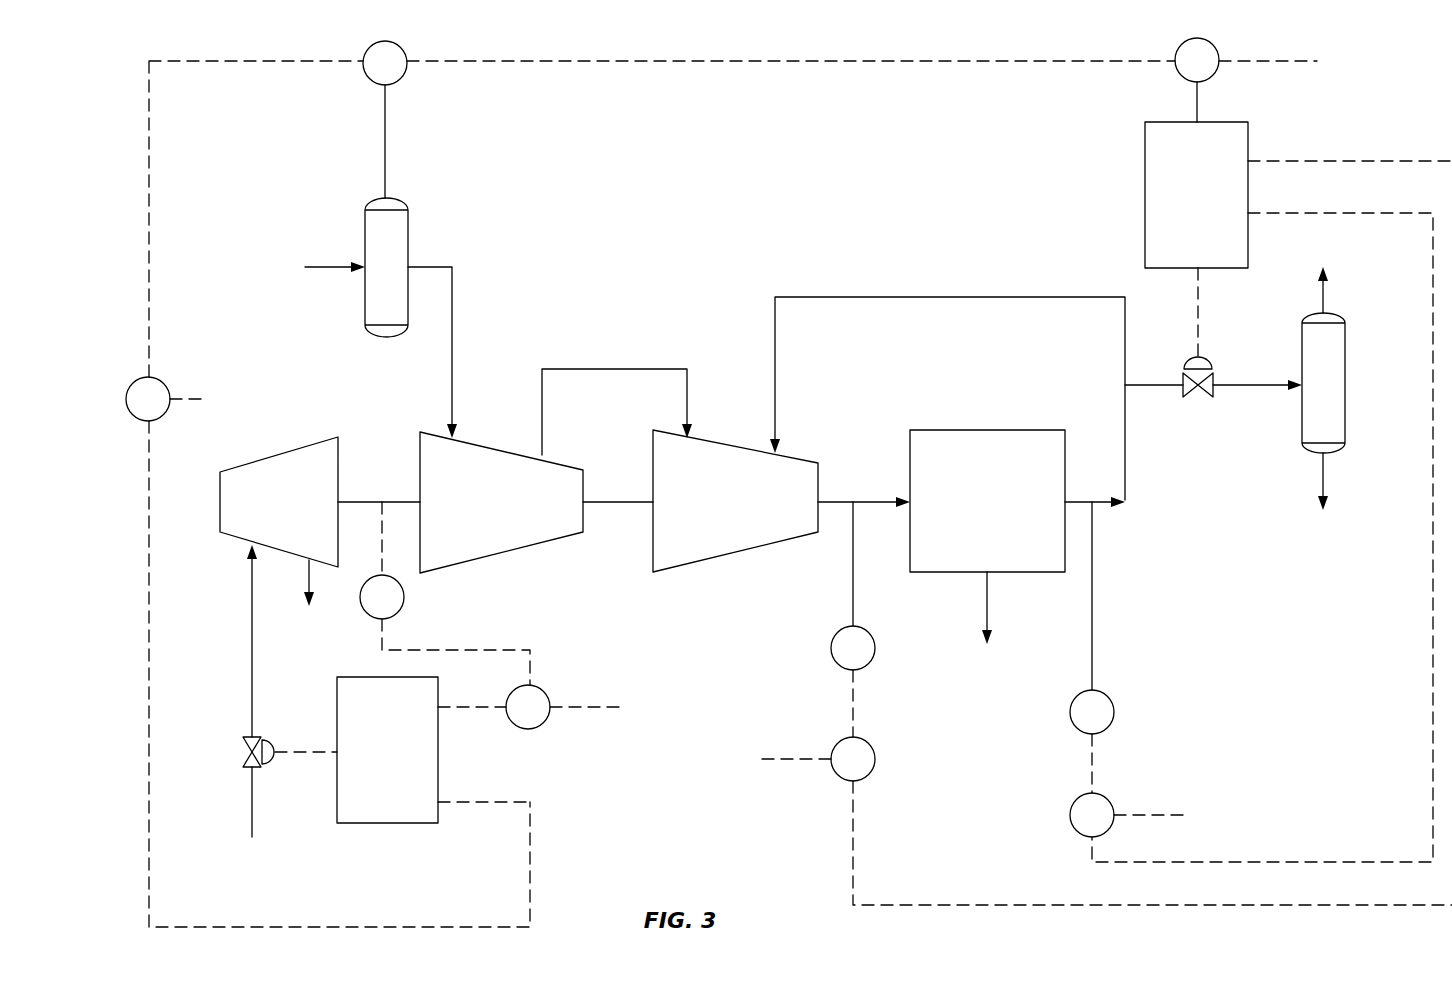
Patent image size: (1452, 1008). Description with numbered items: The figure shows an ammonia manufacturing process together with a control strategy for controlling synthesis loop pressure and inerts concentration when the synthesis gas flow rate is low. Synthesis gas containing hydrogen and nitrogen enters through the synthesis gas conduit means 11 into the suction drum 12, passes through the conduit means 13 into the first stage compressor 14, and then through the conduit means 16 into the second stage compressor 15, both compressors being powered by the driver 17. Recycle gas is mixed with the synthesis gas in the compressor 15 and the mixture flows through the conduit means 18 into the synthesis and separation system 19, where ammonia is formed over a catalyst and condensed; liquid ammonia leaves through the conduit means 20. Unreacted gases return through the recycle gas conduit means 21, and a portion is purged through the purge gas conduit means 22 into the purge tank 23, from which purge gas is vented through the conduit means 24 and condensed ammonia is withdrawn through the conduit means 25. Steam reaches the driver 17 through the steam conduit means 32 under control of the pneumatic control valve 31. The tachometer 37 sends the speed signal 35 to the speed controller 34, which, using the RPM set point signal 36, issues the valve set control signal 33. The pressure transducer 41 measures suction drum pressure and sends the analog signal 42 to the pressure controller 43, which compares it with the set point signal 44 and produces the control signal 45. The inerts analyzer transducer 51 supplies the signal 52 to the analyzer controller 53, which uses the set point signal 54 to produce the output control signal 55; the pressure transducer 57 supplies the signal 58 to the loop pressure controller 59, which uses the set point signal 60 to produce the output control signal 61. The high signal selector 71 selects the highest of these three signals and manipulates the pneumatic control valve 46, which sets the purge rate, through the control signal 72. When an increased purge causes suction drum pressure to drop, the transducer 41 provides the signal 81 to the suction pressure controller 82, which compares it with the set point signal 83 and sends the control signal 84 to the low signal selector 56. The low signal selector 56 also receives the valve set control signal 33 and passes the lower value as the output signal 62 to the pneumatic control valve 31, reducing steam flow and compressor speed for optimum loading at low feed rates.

The synthesis gas conduit means 11 is at (330, 266).
The suction drum 12 is at (365, 305).
The conduit means 13 is at (452, 300).
The first stage compressor 14 is at (501, 502).
The second stage compressor 15 is at (735, 501).
The conduit means 16 is at (612, 369).
The driver 17 is at (279, 521).
The conduit means 18 is at (853, 502).
The synthesis and separation system 19 is at (1017, 560).
The conduit means 20 is at (987, 606).
The recycle gas conduit means 21 is at (775, 297).
The purge gas conduit means 22 is at (1160, 385).
The purge tank 23 is at (1361, 383).
The conduit means 24 is at (1323, 296).
The conduit means 25 is at (1323, 475).
The pneumatic control valve 31 is at (243, 751).
The steam conduit means 32 is at (252, 818).
The valve set control signal 33 is at (480, 707).
The speed controller 34 is at (528, 729).
The signal 35 is at (452, 650).
The RPM set point signal 36 is at (583, 707).
The tachometer 37 is at (368, 613).
The pressure transducer 41 is at (370, 80).
The analog signal 42 is at (512, 63).
The pressure controller 43 is at (1180, 77).
The set point signal 44 is at (1293, 62).
The control signal 45 is at (1197, 105).
The pneumatic control valve 46 is at (1210, 358).
The inerts analyzer transducer 51 is at (1114, 712).
The signal 52 is at (1092, 765).
The analyzer controller 53 is at (1070, 815).
The set point signal 54 is at (1160, 815).
The output control signal 55 is at (1368, 862).
The low signal selector 56 is at (433, 750).
The pressure transducer 57 is at (875, 648).
The signal 58 is at (853, 690).
The loop pressure controller 59 is at (835, 747).
The set point signal 60 is at (797, 759).
The output control signal 61 is at (983, 905).
The output signal 62 is at (305, 752).
The high signal selector 71 is at (1196, 195).
The control signal 72 is at (1198, 312).
The signal 81 is at (149, 148).
The suction pressure controller 82 is at (160, 381).
The set point signal 83 is at (172, 401).
The control signal 84 is at (149, 620).